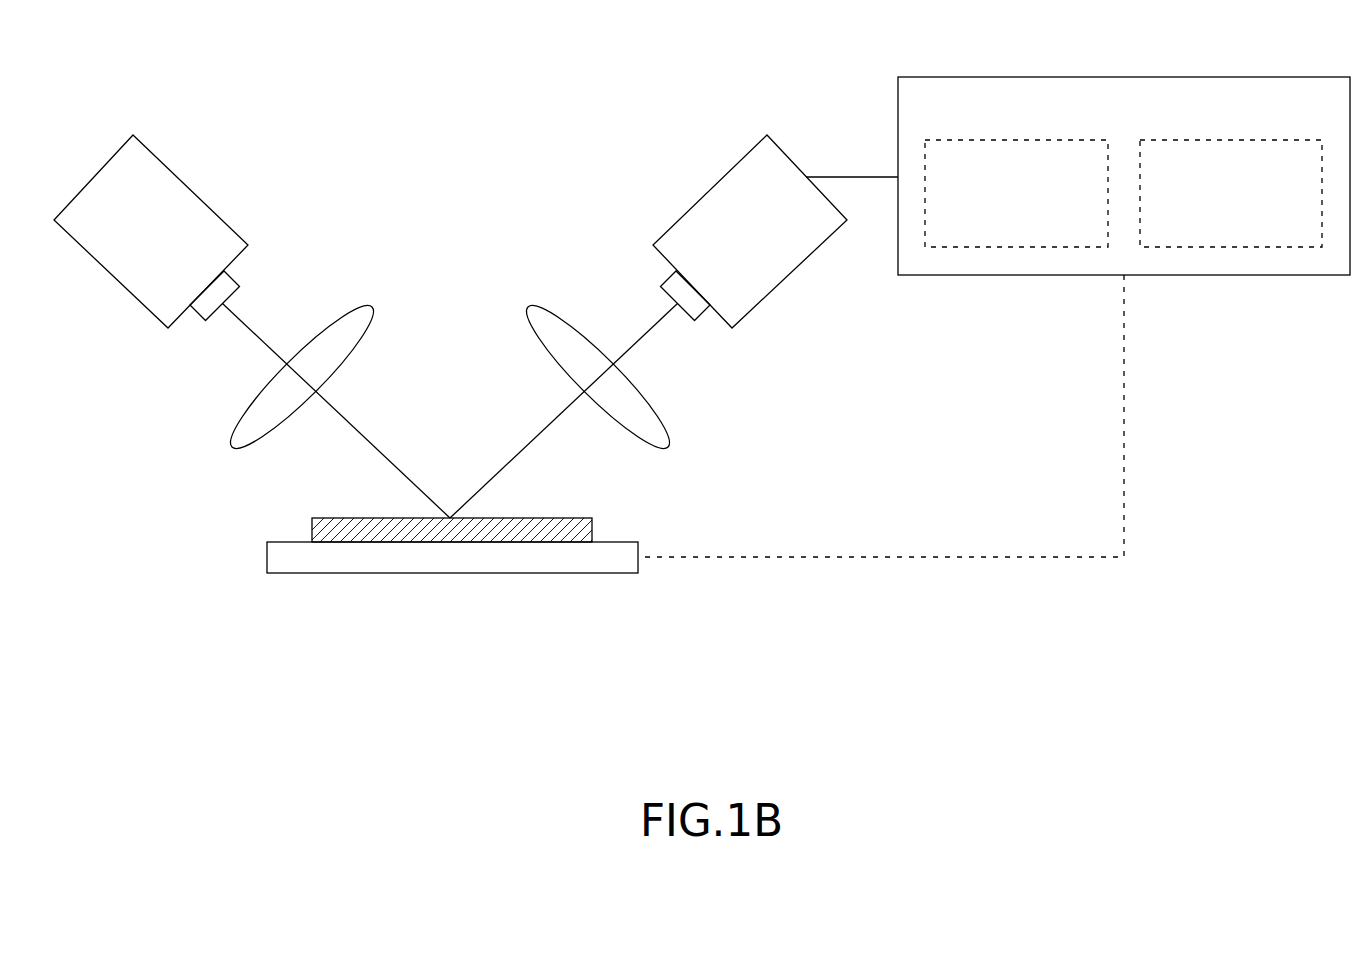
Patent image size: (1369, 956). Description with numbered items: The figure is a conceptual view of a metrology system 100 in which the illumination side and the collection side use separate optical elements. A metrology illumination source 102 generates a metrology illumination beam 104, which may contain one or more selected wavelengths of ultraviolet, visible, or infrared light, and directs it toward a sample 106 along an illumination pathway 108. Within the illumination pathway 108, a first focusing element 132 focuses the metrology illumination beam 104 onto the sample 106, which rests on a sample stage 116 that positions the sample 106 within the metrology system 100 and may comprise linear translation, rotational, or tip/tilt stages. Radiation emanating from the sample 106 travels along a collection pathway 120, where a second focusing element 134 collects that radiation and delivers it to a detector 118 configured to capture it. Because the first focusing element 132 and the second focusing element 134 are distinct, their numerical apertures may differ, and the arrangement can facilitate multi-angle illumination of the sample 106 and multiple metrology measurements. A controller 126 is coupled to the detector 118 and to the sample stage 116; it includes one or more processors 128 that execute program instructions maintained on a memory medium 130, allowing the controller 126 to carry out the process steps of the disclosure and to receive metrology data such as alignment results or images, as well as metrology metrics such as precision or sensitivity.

The metrology system 100 is at (111, 61).
The metrology illumination source 102 is at (169, 249).
The metrology illumination beam 104 is at (255, 330).
The sample 106 is at (310, 520).
The illumination pathway 108 is at (318, 257).
The sample stage 116 is at (268, 551).
The detector 118 is at (771, 249).
The collection pathway 120 is at (554, 257).
The controller 126 is at (947, 108).
The processors 128 is at (973, 169).
The memory medium 130 is at (1187, 169).
The first focusing element 132 is at (238, 428).
The second focusing element 134 is at (663, 428).